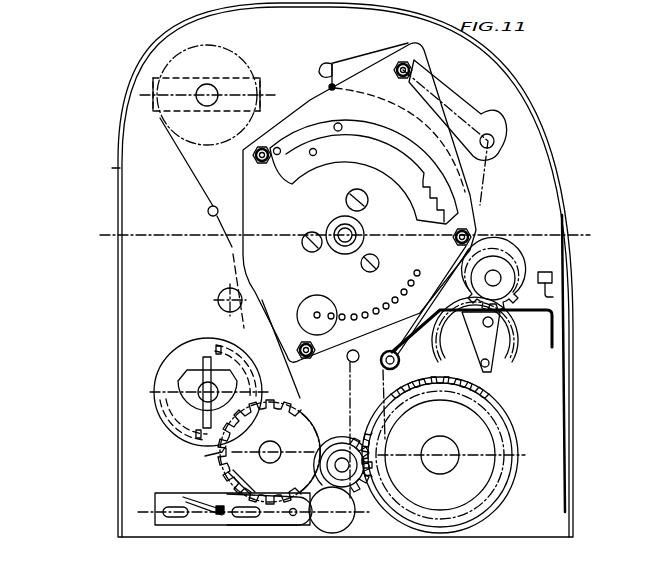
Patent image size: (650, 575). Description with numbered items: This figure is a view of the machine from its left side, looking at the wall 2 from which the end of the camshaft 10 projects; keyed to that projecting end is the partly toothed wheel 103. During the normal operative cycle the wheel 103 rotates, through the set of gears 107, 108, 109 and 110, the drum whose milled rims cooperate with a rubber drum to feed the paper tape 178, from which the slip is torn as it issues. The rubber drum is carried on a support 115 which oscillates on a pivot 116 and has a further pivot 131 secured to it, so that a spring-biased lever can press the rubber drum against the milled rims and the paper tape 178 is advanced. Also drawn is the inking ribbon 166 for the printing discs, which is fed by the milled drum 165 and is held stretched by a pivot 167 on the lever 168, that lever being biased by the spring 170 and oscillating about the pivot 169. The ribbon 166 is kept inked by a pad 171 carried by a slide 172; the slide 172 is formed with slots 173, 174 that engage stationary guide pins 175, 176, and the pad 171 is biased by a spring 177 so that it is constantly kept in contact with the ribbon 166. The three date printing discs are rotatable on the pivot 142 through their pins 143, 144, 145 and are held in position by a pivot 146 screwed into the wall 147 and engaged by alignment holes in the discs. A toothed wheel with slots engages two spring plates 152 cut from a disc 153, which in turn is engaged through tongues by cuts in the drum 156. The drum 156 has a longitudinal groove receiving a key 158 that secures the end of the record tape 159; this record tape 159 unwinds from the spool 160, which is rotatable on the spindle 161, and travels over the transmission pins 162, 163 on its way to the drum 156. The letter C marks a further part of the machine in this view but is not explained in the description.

The wall 2 is at (125, 262).
The cover C is at (114, 168).
The camshaft 10 is at (280, 438).
The partly toothed wheel 103 is at (217, 454).
The gear 107 is at (358, 486).
The gear 108 is at (386, 404).
The gear 109 is at (398, 348).
The gear 110 is at (508, 270).
The support 115 is at (556, 312).
The pivot 116 is at (400, 363).
The pivot 131 is at (500, 365).
The pivot 142 is at (365, 240).
The pin 143 is at (317, 153).
The pin 144 is at (343, 128).
The pin 145 is at (281, 150).
The pivot 146 is at (316, 310).
The wall 147 is at (248, 213).
The spring plates 152 is at (250, 358).
The disc 153 is at (172, 358).
The drum 156 is at (190, 390).
The key 158 is at (206, 365).
The record tape 159 is at (232, 245).
The spool 160 is at (198, 56).
The spindle 161 is at (212, 90).
The transmission pin 162 is at (209, 207).
The transmission pin 163 is at (222, 297).
The milled drum 165 is at (352, 519).
The inking ribbon 166 is at (283, 383).
The pivot 167 is at (495, 144).
The lever 168 is at (478, 118).
The pivot 169 is at (410, 60).
The spring 170 is at (328, 88).
The pad 171 is at (297, 496).
The slide 172 is at (207, 497).
The slot 173 is at (175, 506).
The slot 174 is at (260, 496).
The stationary guide pin 175 is at (157, 519).
The stationary guide pin 176 is at (238, 488).
The spring 177 is at (192, 493).
The paper tape 178 is at (404, 400).